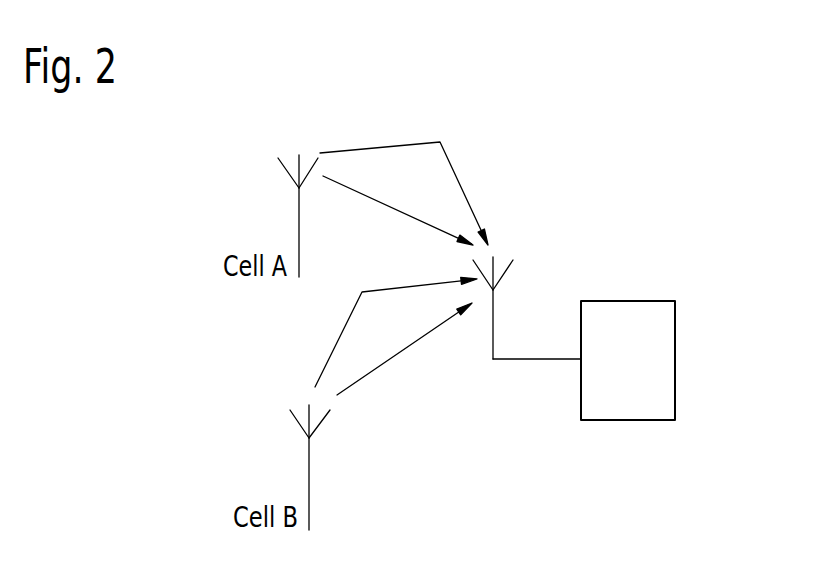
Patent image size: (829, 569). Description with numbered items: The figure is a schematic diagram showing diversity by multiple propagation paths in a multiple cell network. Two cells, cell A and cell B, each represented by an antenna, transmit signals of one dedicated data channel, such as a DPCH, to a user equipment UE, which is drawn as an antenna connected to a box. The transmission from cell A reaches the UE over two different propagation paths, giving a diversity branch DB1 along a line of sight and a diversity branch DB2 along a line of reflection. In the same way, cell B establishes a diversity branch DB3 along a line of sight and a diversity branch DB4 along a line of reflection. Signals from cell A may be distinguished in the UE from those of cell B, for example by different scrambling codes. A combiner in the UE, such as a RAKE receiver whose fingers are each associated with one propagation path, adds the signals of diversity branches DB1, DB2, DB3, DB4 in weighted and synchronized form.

The diversity branch DB1 is at (372, 202).
The diversity branch DB2 is at (378, 142).
The diversity branch DB3 is at (393, 360).
The diversity branch DB4 is at (332, 355).
The user equipment UE is at (574, 338).